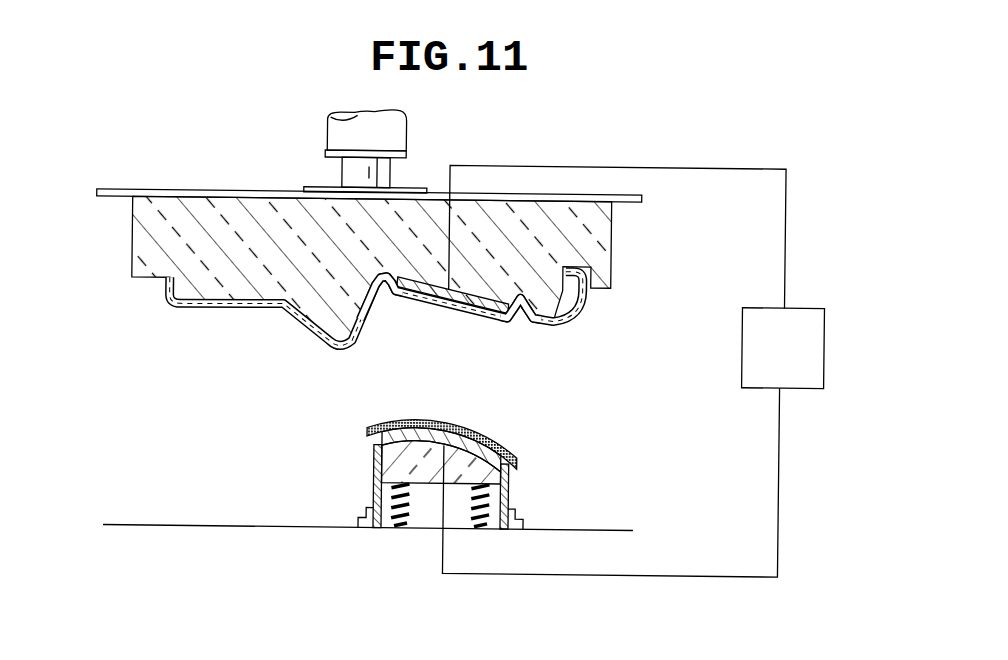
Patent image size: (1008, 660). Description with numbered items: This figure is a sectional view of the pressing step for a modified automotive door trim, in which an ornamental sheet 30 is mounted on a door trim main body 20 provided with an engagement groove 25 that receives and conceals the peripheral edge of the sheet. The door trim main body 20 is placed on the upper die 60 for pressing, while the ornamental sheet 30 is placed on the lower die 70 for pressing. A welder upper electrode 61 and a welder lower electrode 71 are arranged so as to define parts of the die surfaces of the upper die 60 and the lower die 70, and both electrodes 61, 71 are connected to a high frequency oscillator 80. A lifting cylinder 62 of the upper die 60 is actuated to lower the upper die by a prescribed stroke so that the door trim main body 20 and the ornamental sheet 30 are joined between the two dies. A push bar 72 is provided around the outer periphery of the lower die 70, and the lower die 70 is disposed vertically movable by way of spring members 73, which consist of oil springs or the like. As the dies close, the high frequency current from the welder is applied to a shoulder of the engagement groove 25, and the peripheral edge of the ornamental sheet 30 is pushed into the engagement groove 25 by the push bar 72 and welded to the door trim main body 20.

The door trim main body 20 is at (313, 338).
The engagement groove 25 is at (384, 291).
The ornamental sheet 30 is at (418, 428).
The upper die for pressing 60 is at (185, 242).
The welder upper electrode 61 is at (479, 305).
The lifting cylinder 62 is at (345, 129).
The lower die for pressing 70 is at (400, 465).
The welder lower electrode 71 is at (463, 437).
The push bar 72 is at (370, 455).
The spring members 73 is at (392, 529).
The high frequency oscillator 80 is at (815, 373).